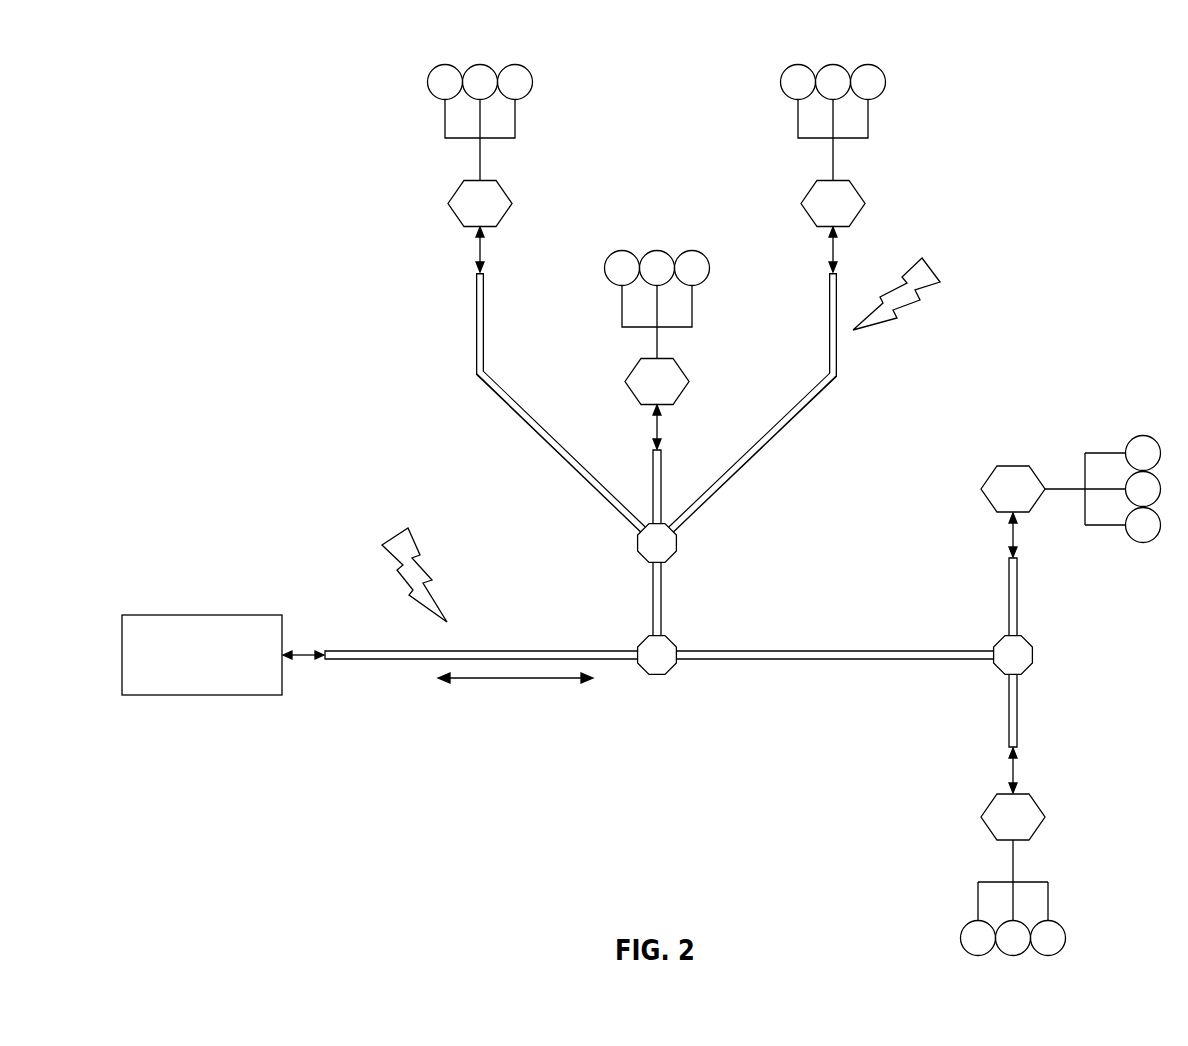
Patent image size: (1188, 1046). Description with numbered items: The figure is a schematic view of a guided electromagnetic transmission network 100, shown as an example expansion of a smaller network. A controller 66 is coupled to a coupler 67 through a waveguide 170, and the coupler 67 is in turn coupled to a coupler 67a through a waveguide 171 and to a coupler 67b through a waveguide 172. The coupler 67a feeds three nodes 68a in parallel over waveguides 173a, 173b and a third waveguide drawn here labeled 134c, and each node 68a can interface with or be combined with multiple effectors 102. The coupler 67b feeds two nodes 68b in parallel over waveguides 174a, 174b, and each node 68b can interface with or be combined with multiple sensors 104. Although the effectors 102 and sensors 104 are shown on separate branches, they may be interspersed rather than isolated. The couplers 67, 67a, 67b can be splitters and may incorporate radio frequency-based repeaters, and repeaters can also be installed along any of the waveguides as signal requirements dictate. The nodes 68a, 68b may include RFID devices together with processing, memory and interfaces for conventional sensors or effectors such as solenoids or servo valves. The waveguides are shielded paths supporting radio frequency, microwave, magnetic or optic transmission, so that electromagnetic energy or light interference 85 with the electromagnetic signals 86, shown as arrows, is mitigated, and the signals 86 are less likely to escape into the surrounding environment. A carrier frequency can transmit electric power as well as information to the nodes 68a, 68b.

The guided electromagnetic transmission network 100 is at (275, 72).
The controller 66 is at (184, 670).
The waveguide 170 is at (346, 661).
The electromagnetic signals 86 is at (520, 683).
The waveguide 172 is at (803, 662).
The waveguide 171 is at (652, 599).
The waveguide 173a is at (476, 328).
The waveguide 173b is at (652, 467).
The branch conduit 134c is at (754, 458).
The waveguide 174a is at (1009, 603).
The waveguide 174b is at (1010, 718).
The coupler 67 is at (655, 677).
The coupler 67a is at (670, 558).
The coupler 67b is at (1035, 657).
The node 68a is at (506, 192).
The node 68b is at (1018, 465).
The effectors 102 is at (525, 83).
The sensors 104 is at (1142, 436).
The electromagnetic energy or light interference 85 is at (390, 545).